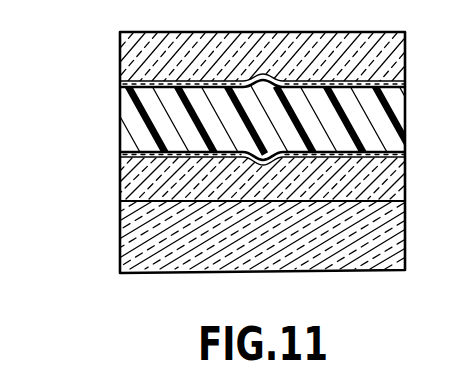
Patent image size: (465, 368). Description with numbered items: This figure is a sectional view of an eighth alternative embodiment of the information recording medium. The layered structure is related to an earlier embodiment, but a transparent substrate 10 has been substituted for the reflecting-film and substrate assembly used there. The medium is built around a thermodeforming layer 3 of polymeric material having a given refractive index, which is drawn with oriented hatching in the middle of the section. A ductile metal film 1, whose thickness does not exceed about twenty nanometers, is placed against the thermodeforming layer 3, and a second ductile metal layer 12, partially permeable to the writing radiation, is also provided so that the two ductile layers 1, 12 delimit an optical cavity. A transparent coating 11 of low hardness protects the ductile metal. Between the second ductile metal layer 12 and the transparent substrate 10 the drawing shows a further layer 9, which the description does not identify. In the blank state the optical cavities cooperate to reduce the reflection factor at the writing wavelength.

The ductile metal film 1 is at (120, 85).
The thermodeforming layer 3 is at (405, 118).
The intermediate layer 9 is at (128, 190).
The transparent substrate 10 is at (125, 247).
The transparent coating 11 is at (120, 62).
The second ductile metal layer 12 is at (120, 155).